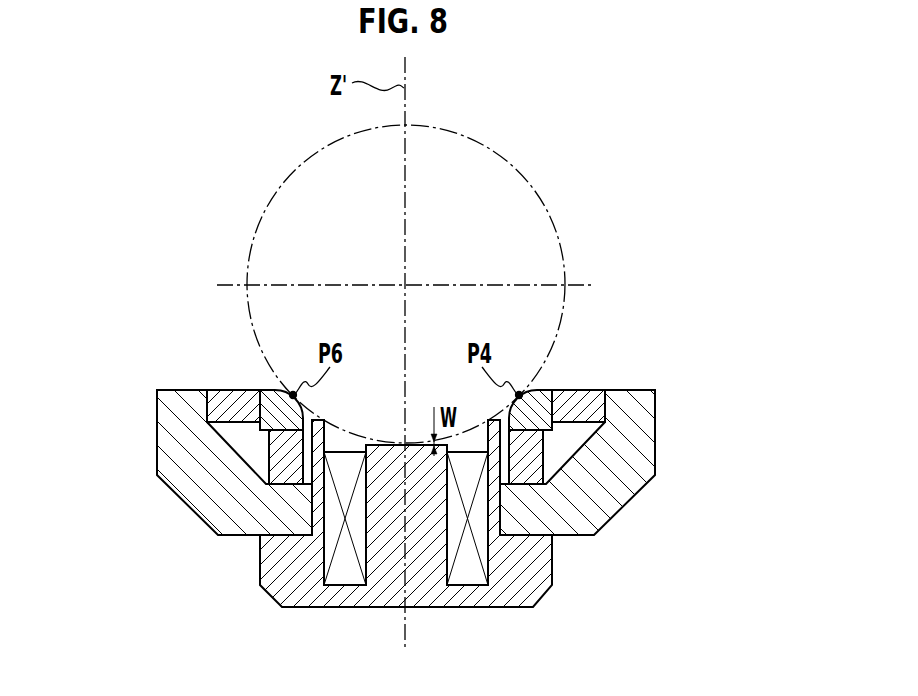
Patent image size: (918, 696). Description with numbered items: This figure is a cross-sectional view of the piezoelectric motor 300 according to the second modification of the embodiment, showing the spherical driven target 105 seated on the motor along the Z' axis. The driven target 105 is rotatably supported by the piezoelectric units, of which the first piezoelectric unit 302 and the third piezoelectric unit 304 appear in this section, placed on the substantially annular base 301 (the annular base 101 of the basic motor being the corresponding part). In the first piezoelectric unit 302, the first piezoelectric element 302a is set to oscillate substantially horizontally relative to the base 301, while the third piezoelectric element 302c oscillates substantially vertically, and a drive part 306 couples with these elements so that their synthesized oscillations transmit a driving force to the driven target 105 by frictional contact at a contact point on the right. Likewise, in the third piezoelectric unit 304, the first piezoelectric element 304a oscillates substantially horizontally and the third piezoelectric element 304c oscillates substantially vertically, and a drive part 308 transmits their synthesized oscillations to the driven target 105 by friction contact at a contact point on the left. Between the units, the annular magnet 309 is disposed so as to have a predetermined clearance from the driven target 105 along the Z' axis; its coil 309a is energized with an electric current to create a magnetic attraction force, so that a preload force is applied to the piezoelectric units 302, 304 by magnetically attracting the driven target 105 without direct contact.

The driven target 105 is at (514, 169).
The piezoelectric motor 300 is at (701, 172).
The base 101 is at (190, 505).
The base 301 is at (622, 505).
The third piezoelectric unit 304 is at (155, 436).
The first piezoelectric element 304a is at (238, 412).
The drive part 308 is at (280, 424).
The third piezoelectric element 304c is at (273, 478).
The first piezoelectric unit 302 is at (654, 435).
The first piezoelectric element 302a is at (574, 412).
The drive part 306 is at (532, 424).
The third piezoelectric element 302c is at (540, 478).
The annular magnet 309 is at (406, 546).
The coil 309a is at (348, 565).